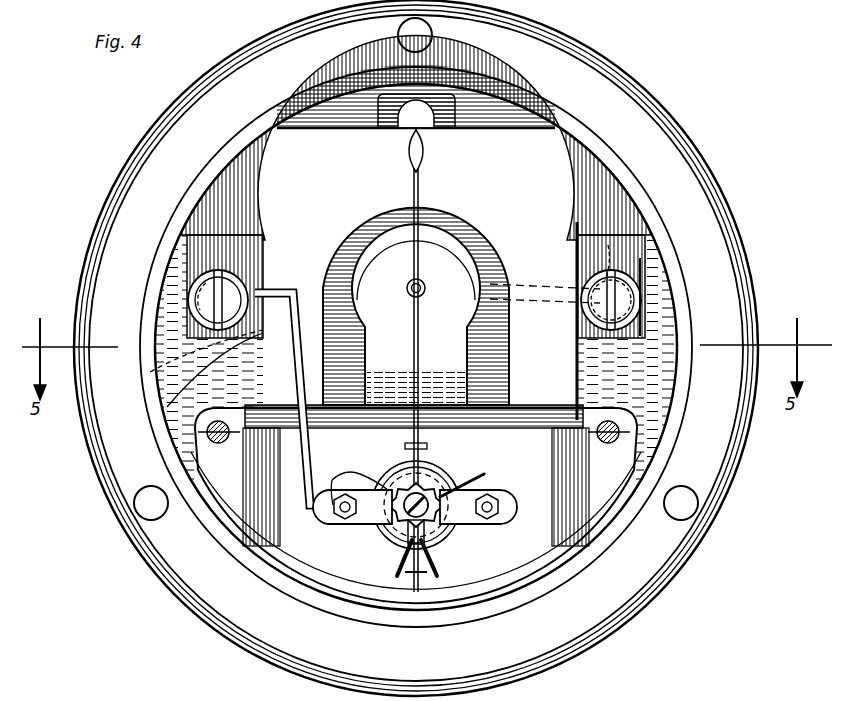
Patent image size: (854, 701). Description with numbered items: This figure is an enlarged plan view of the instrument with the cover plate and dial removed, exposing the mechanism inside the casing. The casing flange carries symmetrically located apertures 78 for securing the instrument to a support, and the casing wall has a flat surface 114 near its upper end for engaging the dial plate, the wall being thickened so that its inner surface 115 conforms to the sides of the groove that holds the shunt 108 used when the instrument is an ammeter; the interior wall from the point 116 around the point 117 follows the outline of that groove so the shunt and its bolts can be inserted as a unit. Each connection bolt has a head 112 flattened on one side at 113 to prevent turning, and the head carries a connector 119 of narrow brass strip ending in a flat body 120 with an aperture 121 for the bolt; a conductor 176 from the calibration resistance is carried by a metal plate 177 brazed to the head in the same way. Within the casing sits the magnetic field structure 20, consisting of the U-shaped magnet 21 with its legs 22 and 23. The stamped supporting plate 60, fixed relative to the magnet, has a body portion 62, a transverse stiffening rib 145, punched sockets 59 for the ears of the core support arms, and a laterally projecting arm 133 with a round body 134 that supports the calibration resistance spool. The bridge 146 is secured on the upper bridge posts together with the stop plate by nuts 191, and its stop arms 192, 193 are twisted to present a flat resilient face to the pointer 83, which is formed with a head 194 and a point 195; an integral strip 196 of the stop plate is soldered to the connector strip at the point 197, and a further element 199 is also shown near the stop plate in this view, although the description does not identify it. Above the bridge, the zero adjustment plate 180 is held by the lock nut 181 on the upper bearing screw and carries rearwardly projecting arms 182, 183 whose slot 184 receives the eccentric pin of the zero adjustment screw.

The shunt 108 is at (557, 130).
The flat surface 114 is at (462, 120).
The inner surface 115 is at (500, 120).
The magnet 21 is at (563, 232).
The point 116 is at (187, 330).
The aperture 121 is at (186, 298).
The point 117 is at (648, 340).
The flattened side 113 is at (645, 306).
The head 112 is at (641, 292).
The metal plate 177 is at (609, 272).
The connector 119 is at (168, 404).
The flat body 120 is at (152, 367).
The round body 134 is at (455, 252).
The laterally projecting arm 133 is at (475, 345).
The magnetic field structure 20 is at (500, 370).
The leg 22 is at (512, 393).
The leg 23 is at (318, 376).
The supporting plate 60 is at (352, 414).
The stiffening rib 145 is at (512, 426).
The body portion 62 is at (566, 422).
The solder point 197 is at (268, 296).
The pointer 83 is at (410, 252).
The conductor 176 is at (492, 290).
The socket 59 is at (410, 575).
The head 194 is at (424, 160).
The point 195 is at (420, 133).
The lock nut 181 is at (427, 488).
The zero adjustment plate 180 is at (398, 535).
The slot 184 is at (410, 540).
The arm 182 is at (426, 532).
The arm 183 is at (434, 562).
The bridge 146 is at (372, 522).
The nut 191 is at (338, 518).
The spring wire 199 is at (352, 473).
The strip 196 is at (308, 470).
The stop arm 192 is at (384, 480).
The stop arm 193 is at (470, 485).
The aperture 78 is at (136, 505).